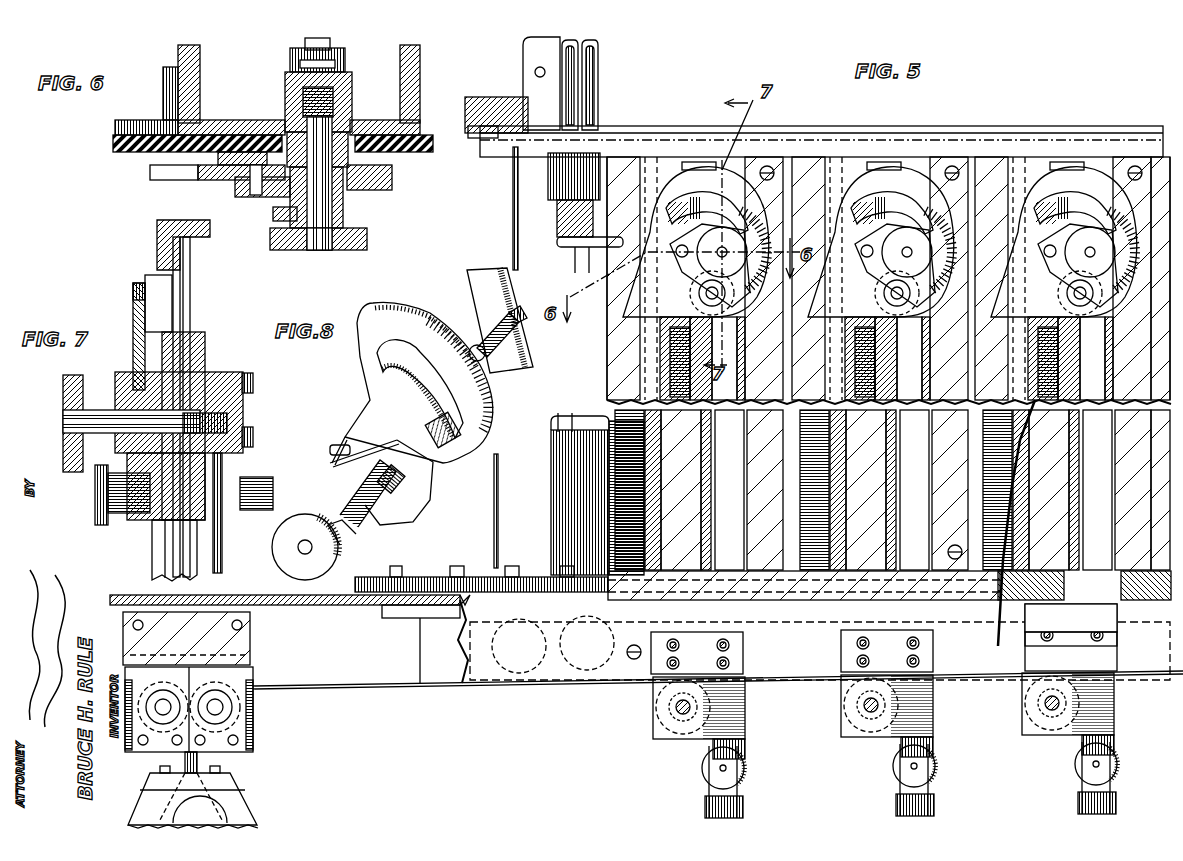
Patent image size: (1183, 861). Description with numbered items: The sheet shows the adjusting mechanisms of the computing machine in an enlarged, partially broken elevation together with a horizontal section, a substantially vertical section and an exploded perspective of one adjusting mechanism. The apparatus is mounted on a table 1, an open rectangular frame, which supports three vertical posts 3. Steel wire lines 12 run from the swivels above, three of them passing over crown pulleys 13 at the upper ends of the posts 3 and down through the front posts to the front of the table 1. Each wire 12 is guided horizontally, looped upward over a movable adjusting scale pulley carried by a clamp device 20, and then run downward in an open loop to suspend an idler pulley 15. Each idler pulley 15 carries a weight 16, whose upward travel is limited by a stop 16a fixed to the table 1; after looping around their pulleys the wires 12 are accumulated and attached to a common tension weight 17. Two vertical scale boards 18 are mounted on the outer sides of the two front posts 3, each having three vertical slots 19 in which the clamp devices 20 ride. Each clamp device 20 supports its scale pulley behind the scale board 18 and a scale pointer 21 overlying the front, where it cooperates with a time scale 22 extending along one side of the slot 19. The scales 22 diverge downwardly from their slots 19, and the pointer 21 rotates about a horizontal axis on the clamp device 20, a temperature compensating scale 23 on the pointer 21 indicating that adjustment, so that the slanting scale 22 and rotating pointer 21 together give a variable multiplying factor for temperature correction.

In FIG. 5, the table 1 is at (233, 598).
In FIG. 5, the vertical post 3 is at (558, 220).
In FIG. 7, the steel wire line 12 is at (222, 557).
In FIG. 5, the steel wire line 12 is at (588, 266).
In FIG. 5, the crown pulley 13 is at (560, 73).
In FIG. 5, the idler pulley 15 is at (748, 772).
In FIG. 5, the weight 16 is at (748, 807).
In FIG. 5, the stop 16a is at (734, 720).
In FIG. 5, the common tension weight 17 is at (240, 810).
In FIG. 6, the scale board 18 is at (125, 153).
In FIG. 5, the scale board 18 is at (817, 173).
In FIG. 6, the vertical slot 19 is at (280, 128).
In FIG. 7, the vertical slot 19 is at (165, 297).
In FIG. 5, the vertical slot 19 is at (737, 371).
In FIG. 6, the clamp device 20 is at (265, 229).
In FIG. 7, the clamp device 20 is at (53, 409).
In FIG. 8, the clamp device 20 is at (320, 488).
In FIG. 5, the clamp device 20 is at (690, 283).
In FIG. 6, the scale pointer 21 is at (158, 170).
In FIG. 8, the scale pointer 21 is at (343, 433).
In FIG. 5, the scale pointer 21 is at (673, 262).
In FIG. 6, the time scale 22 is at (225, 170).
In FIG. 5, the time scale 22 is at (667, 167).
In FIG. 8, the temperature compensating scale 23 is at (447, 342).
In FIG. 5, the temperature compensating scale 23 is at (780, 222).